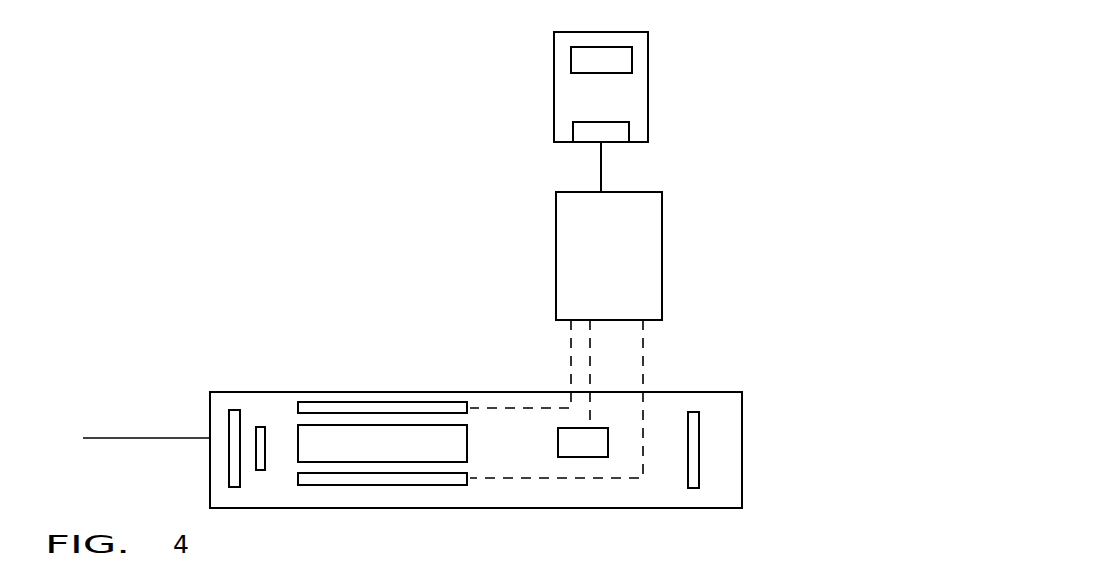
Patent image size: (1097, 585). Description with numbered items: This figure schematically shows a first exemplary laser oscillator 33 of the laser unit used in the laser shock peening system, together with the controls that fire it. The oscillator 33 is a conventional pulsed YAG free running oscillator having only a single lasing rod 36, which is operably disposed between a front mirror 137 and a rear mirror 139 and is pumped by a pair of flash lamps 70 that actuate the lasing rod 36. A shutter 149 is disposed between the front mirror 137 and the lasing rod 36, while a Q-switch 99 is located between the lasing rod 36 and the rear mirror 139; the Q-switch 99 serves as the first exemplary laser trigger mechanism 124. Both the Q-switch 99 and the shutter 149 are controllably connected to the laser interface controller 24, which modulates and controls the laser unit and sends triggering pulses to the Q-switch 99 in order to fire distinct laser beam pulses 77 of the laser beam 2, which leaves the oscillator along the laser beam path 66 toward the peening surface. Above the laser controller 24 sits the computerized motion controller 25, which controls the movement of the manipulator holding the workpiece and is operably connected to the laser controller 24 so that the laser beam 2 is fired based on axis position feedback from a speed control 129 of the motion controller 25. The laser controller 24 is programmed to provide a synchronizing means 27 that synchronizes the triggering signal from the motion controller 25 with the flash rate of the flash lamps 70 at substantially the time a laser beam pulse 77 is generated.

The laser beam 2 is at (147, 439).
The laser interface controller 24 is at (640, 252).
The computerized motion controller 25 is at (648, 98).
The synchronizing means 27 is at (710, 193).
The oscillator 33 is at (695, 392).
The lasing rod 36 is at (390, 455).
The laser beam path 66 is at (112, 437).
The flash lamps 70 is at (365, 402).
The laser beam pulses 77 is at (177, 438).
The Q-switch 99 is at (556, 440).
The first exemplary laser trigger mechanism 124 is at (442, 261).
The speed control 129 is at (617, 133).
The front mirror 137 is at (234, 410).
The rear mirror 139 is at (703, 437).
The shutter 149 is at (260, 427).